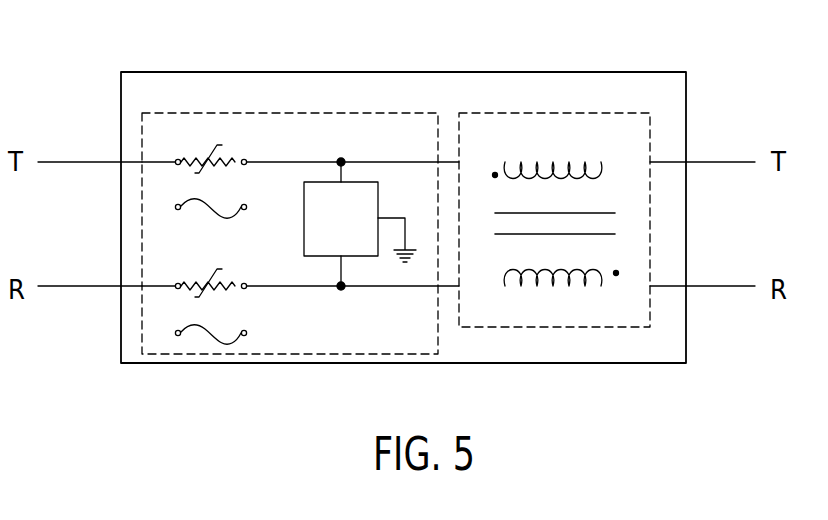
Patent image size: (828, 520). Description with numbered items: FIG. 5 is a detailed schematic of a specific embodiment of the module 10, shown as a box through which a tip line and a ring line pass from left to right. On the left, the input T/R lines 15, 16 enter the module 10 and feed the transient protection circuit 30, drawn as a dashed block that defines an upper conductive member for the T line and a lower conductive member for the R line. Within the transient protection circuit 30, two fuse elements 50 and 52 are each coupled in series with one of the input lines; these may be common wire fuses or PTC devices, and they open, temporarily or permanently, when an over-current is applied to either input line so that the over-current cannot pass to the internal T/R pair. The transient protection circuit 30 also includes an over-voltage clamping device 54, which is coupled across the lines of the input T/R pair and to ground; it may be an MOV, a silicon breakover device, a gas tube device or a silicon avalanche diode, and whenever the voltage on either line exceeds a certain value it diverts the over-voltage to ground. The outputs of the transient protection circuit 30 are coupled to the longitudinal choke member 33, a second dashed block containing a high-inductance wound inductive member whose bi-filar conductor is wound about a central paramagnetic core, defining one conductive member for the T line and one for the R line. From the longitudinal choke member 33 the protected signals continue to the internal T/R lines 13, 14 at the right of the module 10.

The module 10 is at (372, 57).
The internal T line 13 is at (696, 162).
The internal R line 14 is at (696, 286).
The input T line 15 is at (111, 162).
The input R line 16 is at (111, 286).
The transient protection circuit 30 is at (255, 113).
The longitudinal choke member 33 is at (552, 113).
The fuse element 50 is at (233, 157).
The fuse element 52 is at (235, 283).
The over-voltage clamping device 54 is at (304, 245).